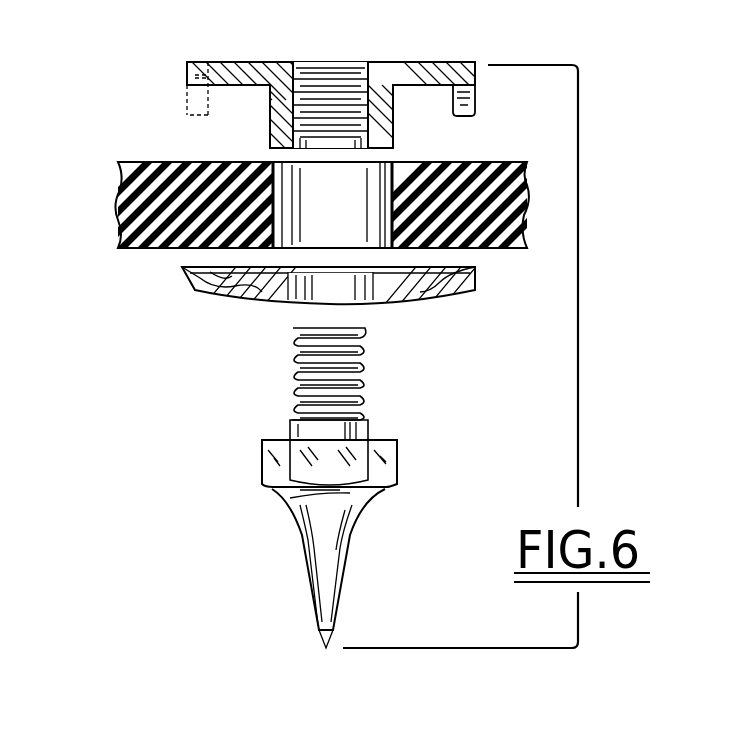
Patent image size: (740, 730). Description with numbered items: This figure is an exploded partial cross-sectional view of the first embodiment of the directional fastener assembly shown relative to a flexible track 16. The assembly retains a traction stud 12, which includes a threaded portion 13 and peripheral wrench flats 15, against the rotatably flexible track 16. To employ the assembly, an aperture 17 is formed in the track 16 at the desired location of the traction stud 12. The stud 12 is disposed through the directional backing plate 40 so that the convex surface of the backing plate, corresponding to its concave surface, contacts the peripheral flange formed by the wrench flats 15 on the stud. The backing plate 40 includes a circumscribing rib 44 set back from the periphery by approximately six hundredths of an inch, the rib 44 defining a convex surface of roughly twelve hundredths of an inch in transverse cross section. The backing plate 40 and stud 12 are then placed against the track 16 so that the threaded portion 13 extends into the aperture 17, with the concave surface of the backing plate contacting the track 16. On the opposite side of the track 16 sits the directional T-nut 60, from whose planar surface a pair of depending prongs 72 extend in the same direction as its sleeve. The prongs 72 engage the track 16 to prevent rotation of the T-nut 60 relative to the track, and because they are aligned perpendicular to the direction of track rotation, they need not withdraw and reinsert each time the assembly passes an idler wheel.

The traction stud 12 is at (376, 499).
The threaded portion 13 is at (363, 372).
The wrench flats 15 is at (388, 462).
The track 16 is at (324, 187).
The aperture 17 is at (292, 160).
The backing plate 40 is at (352, 304).
The rib 44 is at (213, 296).
The T-nut 60 is at (341, 77).
The prongs 72 is at (198, 98).